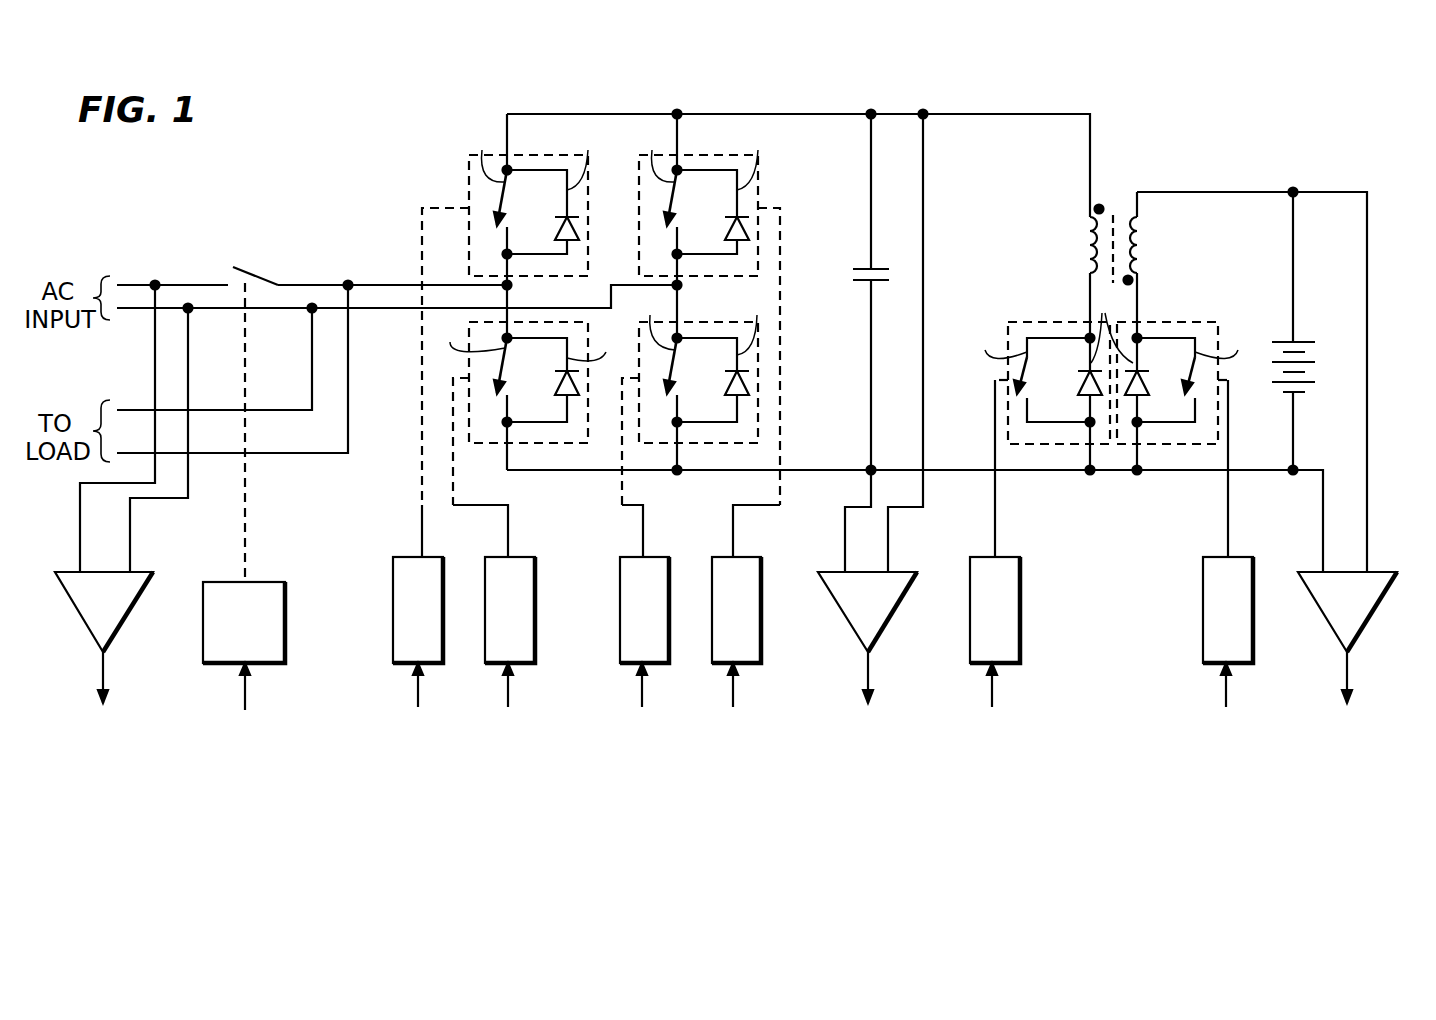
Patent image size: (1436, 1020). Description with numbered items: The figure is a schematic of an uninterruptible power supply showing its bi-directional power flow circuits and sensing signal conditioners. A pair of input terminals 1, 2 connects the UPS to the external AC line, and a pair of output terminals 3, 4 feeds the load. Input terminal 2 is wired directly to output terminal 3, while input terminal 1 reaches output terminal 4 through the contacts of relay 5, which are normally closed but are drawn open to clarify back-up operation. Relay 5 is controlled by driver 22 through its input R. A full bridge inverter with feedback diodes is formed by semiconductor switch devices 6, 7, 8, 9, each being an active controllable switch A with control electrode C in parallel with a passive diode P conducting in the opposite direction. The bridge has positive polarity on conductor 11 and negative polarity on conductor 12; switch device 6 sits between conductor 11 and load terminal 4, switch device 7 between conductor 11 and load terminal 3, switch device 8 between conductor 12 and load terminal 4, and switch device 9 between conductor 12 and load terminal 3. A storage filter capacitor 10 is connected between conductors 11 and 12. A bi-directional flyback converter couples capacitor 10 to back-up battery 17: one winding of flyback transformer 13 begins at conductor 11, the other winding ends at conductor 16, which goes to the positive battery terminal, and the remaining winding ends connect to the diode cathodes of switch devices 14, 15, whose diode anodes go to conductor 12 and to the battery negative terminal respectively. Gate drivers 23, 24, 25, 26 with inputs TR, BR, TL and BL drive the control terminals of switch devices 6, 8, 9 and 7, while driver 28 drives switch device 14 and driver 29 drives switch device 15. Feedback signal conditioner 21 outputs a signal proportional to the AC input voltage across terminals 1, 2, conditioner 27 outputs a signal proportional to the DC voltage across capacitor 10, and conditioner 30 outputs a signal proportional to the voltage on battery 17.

The input terminal 1 is at (172, 272).
The input terminal 2 is at (397, 311).
The output terminal 3 is at (214, 359).
The output terminal 4 is at (232, 369).
The relay 5 is at (250, 266).
The semiconductor switch device 6 is at (565, 152).
The semiconductor switch device 7 is at (735, 152).
The semiconductor switch device 8 is at (588, 410).
The semiconductor switch device 9 is at (737, 323).
The storage filter capacitor 10 is at (863, 268).
The positive potential conductor 11 is at (808, 114).
The negative potential conductor 12 is at (840, 465).
The flyback transformer 13 is at (1120, 203).
The semiconductor switch device 14 is at (1063, 318).
The semiconductor switch device 15 is at (1198, 318).
The conductor 16 is at (1203, 192).
The back-up battery 17 is at (1318, 340).
The feedback signal conditioner 21 is at (137, 572).
The driver 22 is at (273, 582).
The driver 23 is at (428, 557).
The driver 24 is at (520, 557).
The driver 25 is at (653, 557).
The driver 26 is at (745, 557).
The feedback signal conditioner 27 is at (900, 572).
The driver 28 is at (1005, 557).
The driver 29 is at (1237, 557).
The feedback signal conditioner 30 is at (1380, 572).